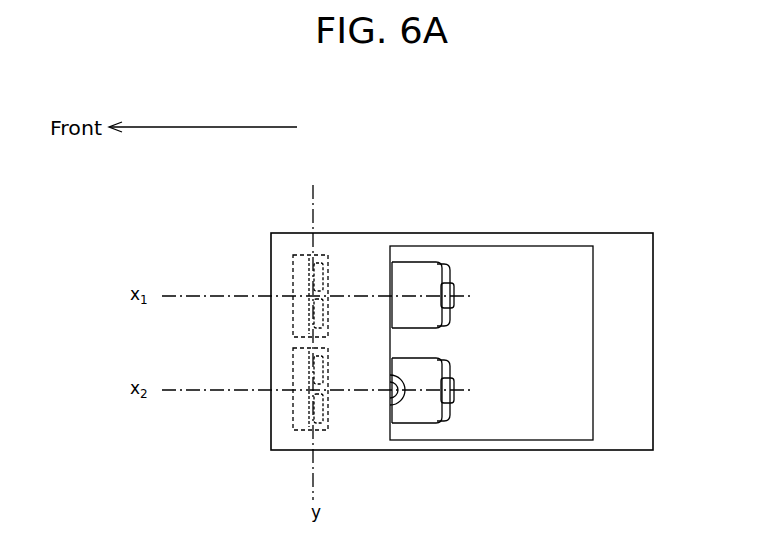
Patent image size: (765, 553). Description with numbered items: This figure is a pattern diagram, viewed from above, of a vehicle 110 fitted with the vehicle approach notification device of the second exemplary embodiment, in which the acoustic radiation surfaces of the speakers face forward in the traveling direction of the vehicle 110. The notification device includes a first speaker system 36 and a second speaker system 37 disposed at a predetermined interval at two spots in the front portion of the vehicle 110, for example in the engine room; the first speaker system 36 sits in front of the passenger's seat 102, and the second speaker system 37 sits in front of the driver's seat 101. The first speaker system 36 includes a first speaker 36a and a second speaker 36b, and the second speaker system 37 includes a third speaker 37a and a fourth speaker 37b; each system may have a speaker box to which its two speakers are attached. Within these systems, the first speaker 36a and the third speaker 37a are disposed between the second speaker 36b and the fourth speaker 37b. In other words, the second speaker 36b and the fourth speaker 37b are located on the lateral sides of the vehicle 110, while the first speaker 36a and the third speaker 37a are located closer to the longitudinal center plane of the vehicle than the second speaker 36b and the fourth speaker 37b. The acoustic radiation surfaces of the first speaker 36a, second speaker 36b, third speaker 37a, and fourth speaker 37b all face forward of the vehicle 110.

The vehicle 110 is at (463, 233).
The passenger's seat 102 is at (413, 273).
The driver's seat 101 is at (420, 412).
The first speaker system 36 is at (273, 267).
The first speaker 36a is at (308, 313).
The second speaker 36b is at (308, 280).
The second speaker system 37 is at (272, 422).
The third speaker 37a is at (305, 372).
The fourth speaker 37b is at (307, 407).